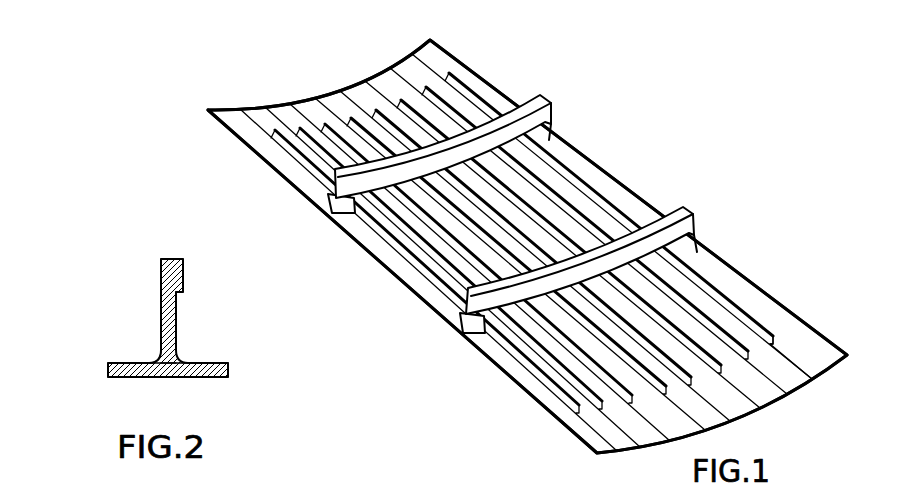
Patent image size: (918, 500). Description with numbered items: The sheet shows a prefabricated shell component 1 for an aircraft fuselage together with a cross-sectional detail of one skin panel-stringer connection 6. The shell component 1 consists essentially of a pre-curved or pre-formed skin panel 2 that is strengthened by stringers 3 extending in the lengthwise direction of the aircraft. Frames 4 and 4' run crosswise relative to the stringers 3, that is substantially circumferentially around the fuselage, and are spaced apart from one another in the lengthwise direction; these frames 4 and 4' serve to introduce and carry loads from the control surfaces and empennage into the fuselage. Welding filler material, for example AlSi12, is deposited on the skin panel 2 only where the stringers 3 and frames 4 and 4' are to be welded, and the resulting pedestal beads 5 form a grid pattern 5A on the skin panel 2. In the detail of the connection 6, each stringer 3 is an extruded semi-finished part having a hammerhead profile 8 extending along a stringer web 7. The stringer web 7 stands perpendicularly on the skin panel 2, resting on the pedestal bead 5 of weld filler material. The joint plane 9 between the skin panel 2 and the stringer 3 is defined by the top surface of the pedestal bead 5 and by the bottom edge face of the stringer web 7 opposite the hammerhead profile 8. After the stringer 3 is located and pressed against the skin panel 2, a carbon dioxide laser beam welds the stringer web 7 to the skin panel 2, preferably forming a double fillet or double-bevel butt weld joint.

In FIG. 1, the shell component 1 is at (343, 50).
In FIG. 1, the skin panel 2 is at (433, 58).
In FIG. 2, the skin panel 2 is at (205, 377).
In FIG. 1, the stringer 3 is at (750, 325).
In FIG. 2, the stringer 3 is at (162, 294).
In FIG. 1, the frame 4 is at (457, 150).
In FIG. 1, the frame 4' is at (600, 258).
In FIG. 1, the grid pattern 5A is at (783, 352).
In FIG. 2, the connection 6 is at (125, 240).
In FIG. 2, the stringer web 7 is at (176, 342).
In FIG. 2, the hammerhead profile 8 is at (183, 275).
In FIG. 2, the pedestal bead 5 is at (158, 357).
In FIG. 2, the joint plane 9 is at (167, 377).